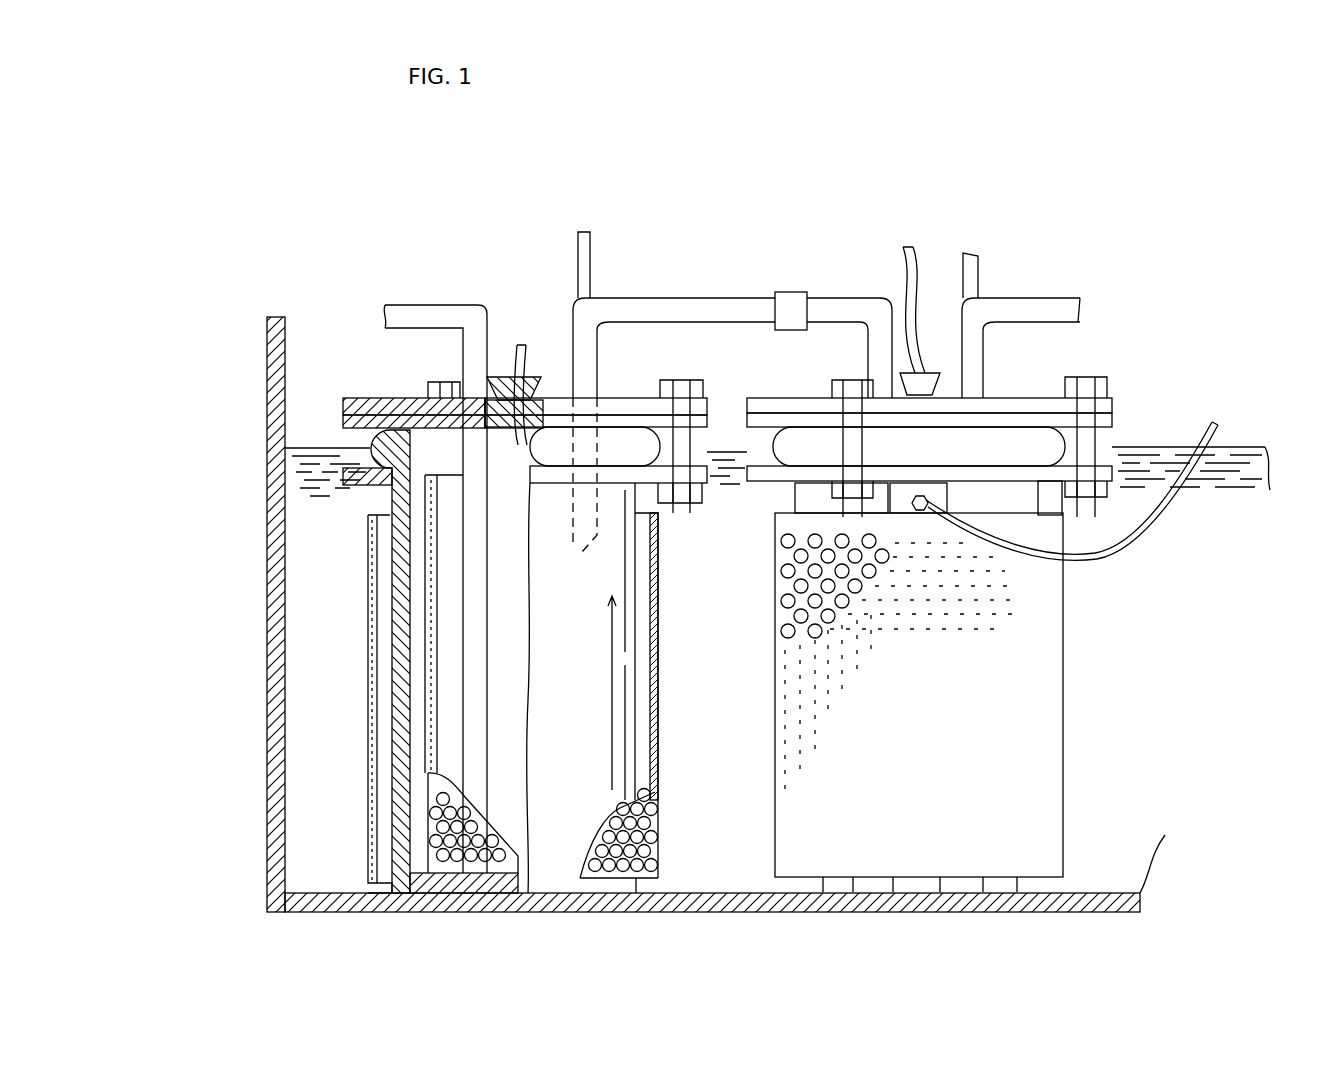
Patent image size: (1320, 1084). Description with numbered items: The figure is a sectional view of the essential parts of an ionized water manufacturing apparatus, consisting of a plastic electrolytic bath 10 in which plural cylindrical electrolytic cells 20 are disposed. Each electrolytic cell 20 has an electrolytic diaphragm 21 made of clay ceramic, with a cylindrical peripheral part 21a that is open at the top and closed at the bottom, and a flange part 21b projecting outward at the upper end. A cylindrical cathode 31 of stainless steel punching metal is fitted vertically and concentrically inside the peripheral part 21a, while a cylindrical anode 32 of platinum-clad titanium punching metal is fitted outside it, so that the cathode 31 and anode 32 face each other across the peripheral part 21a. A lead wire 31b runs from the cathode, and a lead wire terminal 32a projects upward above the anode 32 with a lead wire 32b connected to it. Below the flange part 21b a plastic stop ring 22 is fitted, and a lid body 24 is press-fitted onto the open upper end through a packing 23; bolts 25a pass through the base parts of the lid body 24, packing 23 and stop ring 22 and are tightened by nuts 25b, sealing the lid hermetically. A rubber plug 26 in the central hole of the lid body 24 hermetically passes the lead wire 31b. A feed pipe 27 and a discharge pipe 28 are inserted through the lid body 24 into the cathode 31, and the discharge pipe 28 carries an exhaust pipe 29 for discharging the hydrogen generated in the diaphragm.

The electrolytic bath 10 is at (267, 770).
The electrolytic cell 20 is at (648, 505).
The electrolytic diaphragm 21 is at (610, 585).
The peripheral part 21a is at (375, 562).
The flange part 21b is at (370, 445).
The stop ring 22 is at (345, 483).
The packing 23 is at (345, 425).
The lid body 24 is at (345, 405).
The bolt 25a is at (432, 388).
The nut 25b is at (693, 503).
The rubber plug 26 is at (503, 392).
The feed pipe 27 is at (418, 305).
The discharge pipe 28 is at (618, 300).
The exhaust pipe 29 is at (578, 248).
The cathode 31 is at (460, 848).
The lead wire 31b is at (510, 375).
The anode 32 is at (645, 828).
The lead wire terminal 32a is at (912, 507).
The lead wire 32b is at (1215, 440).